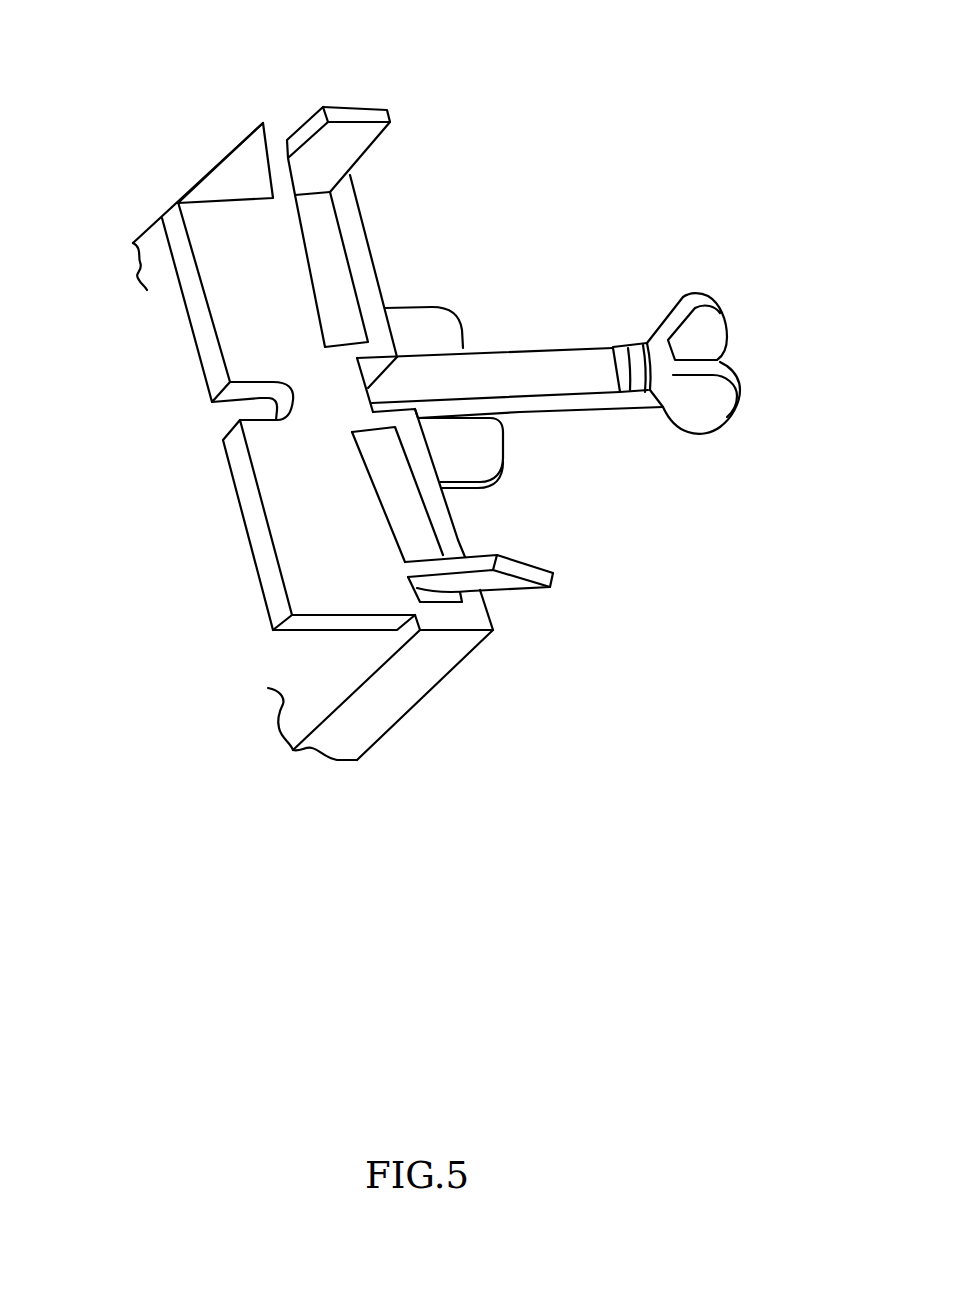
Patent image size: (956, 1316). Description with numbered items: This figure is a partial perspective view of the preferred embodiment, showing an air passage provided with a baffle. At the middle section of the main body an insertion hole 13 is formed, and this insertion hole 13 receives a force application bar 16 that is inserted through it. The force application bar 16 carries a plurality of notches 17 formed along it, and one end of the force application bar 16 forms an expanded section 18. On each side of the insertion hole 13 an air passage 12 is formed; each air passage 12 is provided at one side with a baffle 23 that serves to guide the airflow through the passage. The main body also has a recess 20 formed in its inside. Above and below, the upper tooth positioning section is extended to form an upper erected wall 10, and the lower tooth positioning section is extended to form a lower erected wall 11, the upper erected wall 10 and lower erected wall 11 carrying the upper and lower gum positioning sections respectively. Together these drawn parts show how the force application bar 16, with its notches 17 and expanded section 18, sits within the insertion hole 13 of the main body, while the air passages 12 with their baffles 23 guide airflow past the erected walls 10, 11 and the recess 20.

The upper erected wall 10 is at (295, 467).
The lower erected wall 11 is at (443, 340).
The air passage 12 is at (330, 258).
The insertion hole 13 is at (375, 370).
The force application bar 16 is at (563, 383).
The notches 17 is at (623, 350).
The expanded section 18 is at (703, 403).
The recess 20 is at (265, 406).
The baffle 23 is at (343, 142).